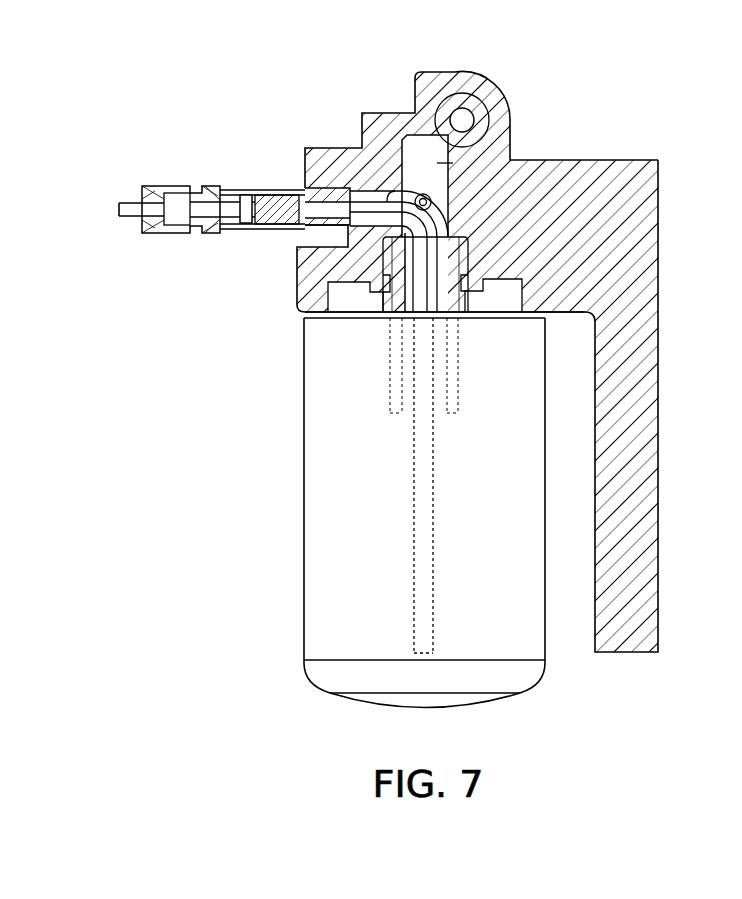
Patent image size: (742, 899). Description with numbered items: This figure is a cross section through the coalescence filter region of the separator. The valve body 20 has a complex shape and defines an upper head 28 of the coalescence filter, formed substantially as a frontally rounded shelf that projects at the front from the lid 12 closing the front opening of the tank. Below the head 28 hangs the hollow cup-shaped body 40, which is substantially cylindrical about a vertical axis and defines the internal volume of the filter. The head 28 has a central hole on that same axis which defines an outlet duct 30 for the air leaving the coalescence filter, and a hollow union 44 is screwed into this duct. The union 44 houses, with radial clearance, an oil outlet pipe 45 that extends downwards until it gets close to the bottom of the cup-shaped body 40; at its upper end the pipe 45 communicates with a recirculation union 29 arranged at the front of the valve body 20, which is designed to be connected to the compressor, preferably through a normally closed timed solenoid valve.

The lid 12 is at (644, 361).
The valve body 20 is at (353, 111).
The upper head 28 is at (336, 262).
The recirculation union 29 is at (184, 185).
The outlet duct 30 is at (506, 126).
The hollow cup-shaped body 40 is at (332, 548).
The hollow union 44 is at (486, 257).
The oil outlet pipe 45 is at (423, 263).